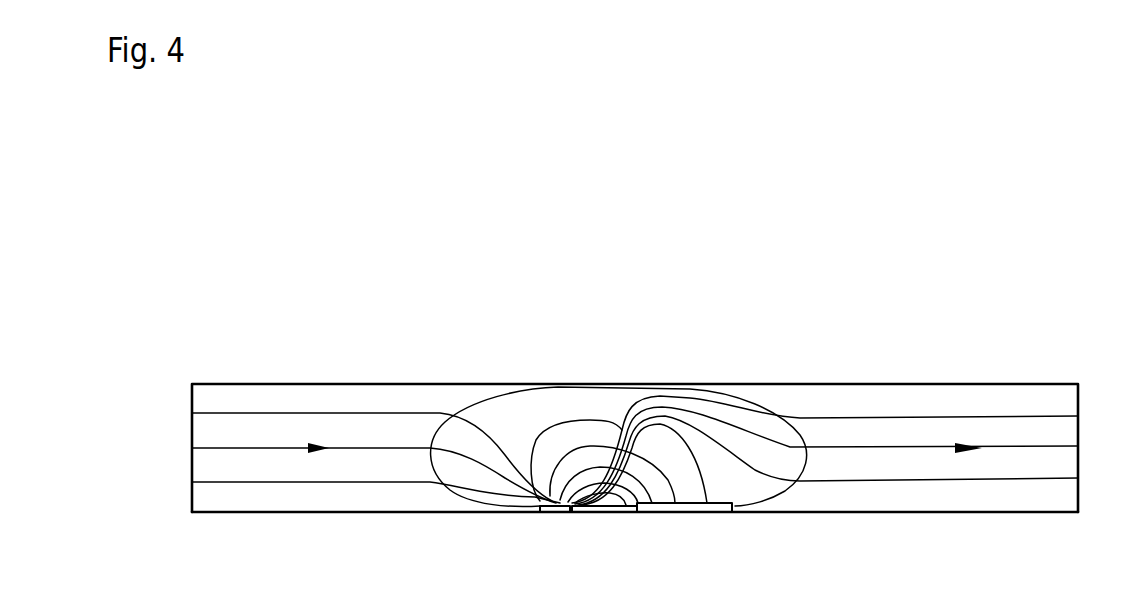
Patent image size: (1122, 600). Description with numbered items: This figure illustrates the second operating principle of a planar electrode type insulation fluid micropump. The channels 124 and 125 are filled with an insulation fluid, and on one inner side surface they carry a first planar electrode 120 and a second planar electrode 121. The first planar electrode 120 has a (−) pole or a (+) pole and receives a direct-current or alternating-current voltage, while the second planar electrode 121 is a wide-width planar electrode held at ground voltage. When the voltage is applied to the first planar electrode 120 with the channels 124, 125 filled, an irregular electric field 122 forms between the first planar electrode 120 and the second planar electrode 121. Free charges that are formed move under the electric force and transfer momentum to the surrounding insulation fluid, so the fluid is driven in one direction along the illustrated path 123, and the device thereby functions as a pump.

The first planar electrode 120 is at (553, 511).
The second planar electrode 121 is at (683, 511).
The irregular electric field 122 is at (775, 500).
The path 123 is at (362, 448).
The channel 124 is at (879, 383).
The channel 125 is at (918, 513).